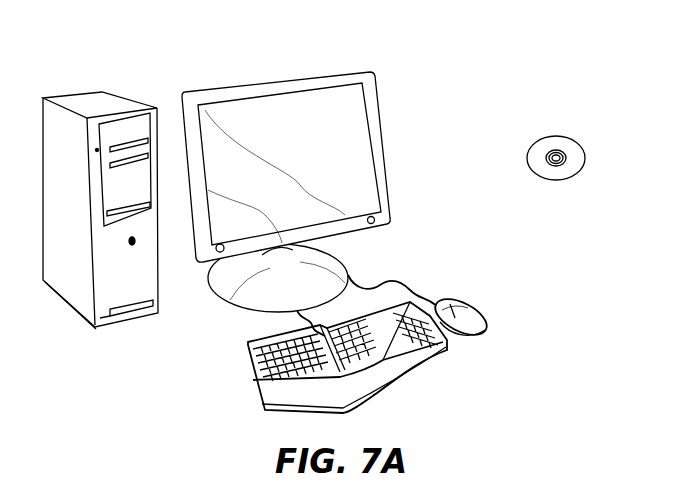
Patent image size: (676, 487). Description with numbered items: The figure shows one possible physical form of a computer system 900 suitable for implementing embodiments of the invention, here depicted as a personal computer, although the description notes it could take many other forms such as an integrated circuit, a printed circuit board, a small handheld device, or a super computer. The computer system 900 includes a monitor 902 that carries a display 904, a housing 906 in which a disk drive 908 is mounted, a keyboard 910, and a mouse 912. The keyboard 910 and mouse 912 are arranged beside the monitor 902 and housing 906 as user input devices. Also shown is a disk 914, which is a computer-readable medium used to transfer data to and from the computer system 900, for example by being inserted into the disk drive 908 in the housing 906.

The computer system 900 is at (487, 60).
The monitor 902 is at (327, 167).
The display 904 is at (345, 110).
The housing 906 is at (89, 102).
The disk drive 908 is at (145, 205).
The keyboard 910 is at (260, 379).
The mouse 912 is at (480, 310).
The disk 914 is at (570, 137).